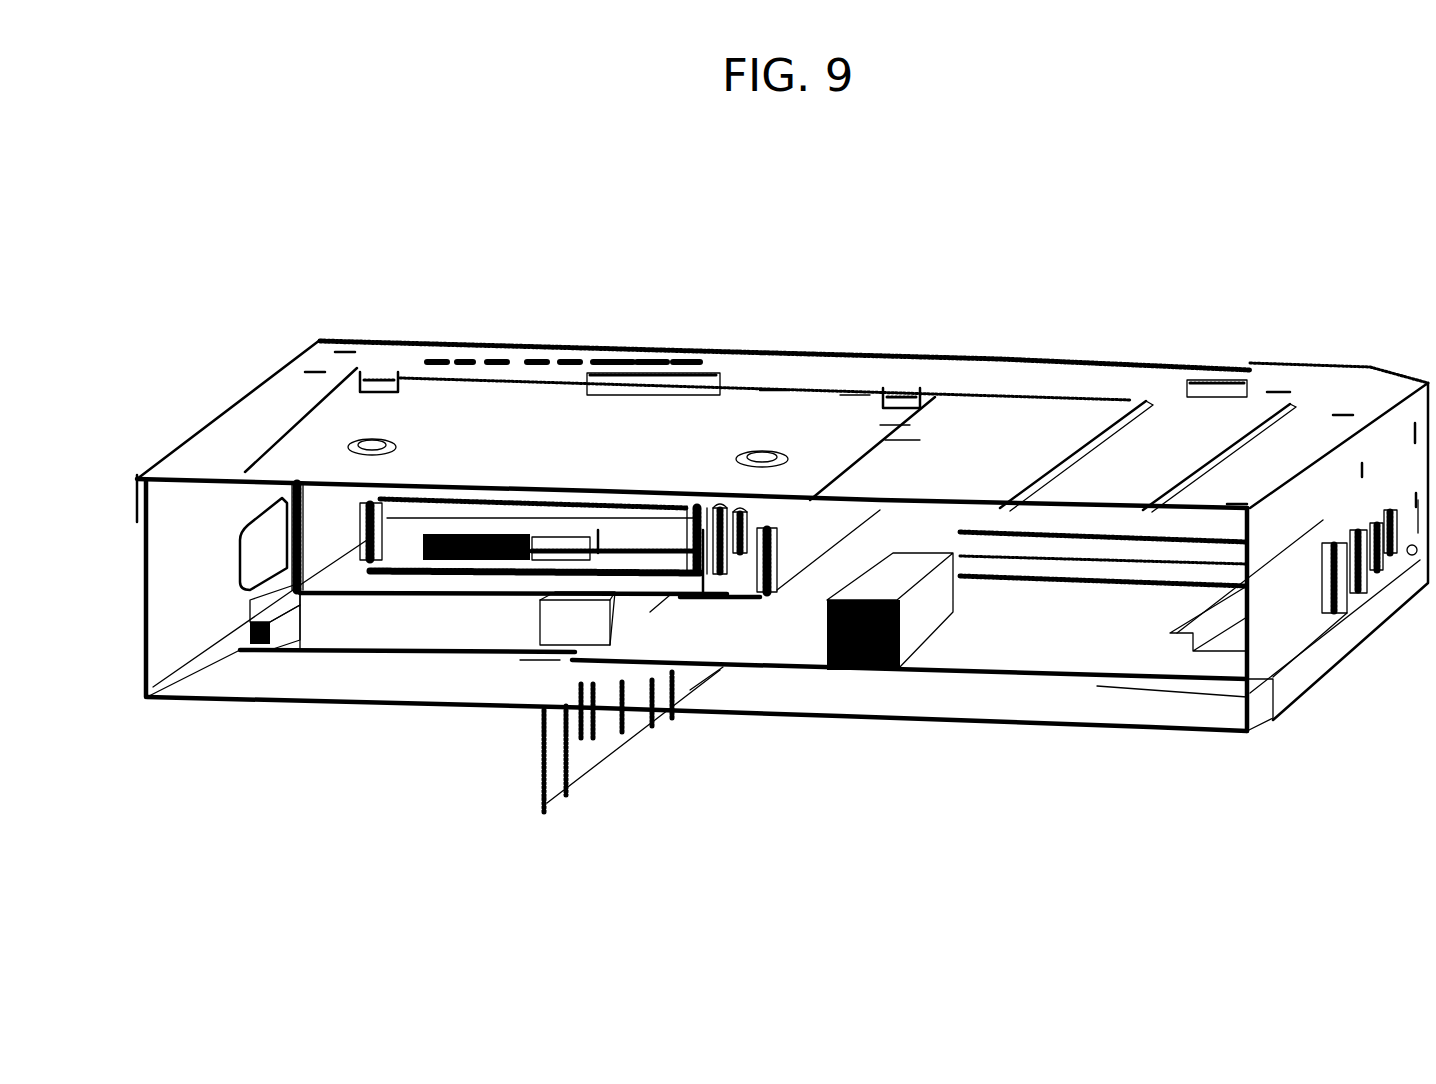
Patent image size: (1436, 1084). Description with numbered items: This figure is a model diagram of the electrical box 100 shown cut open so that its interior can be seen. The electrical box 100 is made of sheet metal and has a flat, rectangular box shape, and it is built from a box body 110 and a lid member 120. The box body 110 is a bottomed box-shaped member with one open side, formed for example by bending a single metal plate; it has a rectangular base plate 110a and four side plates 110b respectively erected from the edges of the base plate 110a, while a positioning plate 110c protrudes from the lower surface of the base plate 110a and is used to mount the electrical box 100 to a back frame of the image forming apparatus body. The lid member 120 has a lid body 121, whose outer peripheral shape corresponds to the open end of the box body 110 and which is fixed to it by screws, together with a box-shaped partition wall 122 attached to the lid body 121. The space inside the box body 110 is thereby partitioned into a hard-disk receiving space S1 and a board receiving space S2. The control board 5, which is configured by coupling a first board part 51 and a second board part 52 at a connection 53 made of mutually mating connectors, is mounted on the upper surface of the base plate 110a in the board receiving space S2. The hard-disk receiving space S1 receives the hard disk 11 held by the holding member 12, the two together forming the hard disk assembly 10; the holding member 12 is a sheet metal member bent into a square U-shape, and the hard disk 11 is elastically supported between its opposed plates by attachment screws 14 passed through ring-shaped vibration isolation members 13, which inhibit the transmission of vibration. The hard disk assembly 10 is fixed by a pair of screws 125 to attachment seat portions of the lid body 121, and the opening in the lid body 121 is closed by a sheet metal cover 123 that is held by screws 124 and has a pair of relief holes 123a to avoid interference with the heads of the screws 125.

The electrical box 100 is at (325, 246).
The box body 110 is at (236, 697).
The base plate 110a is at (937, 725).
The side plates 110b is at (187, 612).
The positioning plate 110c is at (553, 795).
The lid member 120 is at (737, 358).
The lid body 121 is at (983, 430).
The partition wall 122 is at (282, 522).
The sheet metal cover 123 is at (610, 427).
The relief holes 123a is at (370, 445).
The screws 124 is at (380, 370).
The screws 125 is at (377, 447).
The hard disk assembly 10 is at (393, 795).
The hard disk 11 is at (428, 517).
The holding member 12 is at (370, 563).
The vibration isolation member 13 is at (723, 553).
The attachment screw 14 is at (357, 523).
The control board 5 is at (787, 895).
The first board part 51 is at (520, 660).
The second board part 52 is at (727, 668).
The connection 53 is at (583, 632).
The hard-disk receiving space S1 is at (487, 578).
The board receiving space S2 is at (457, 673).